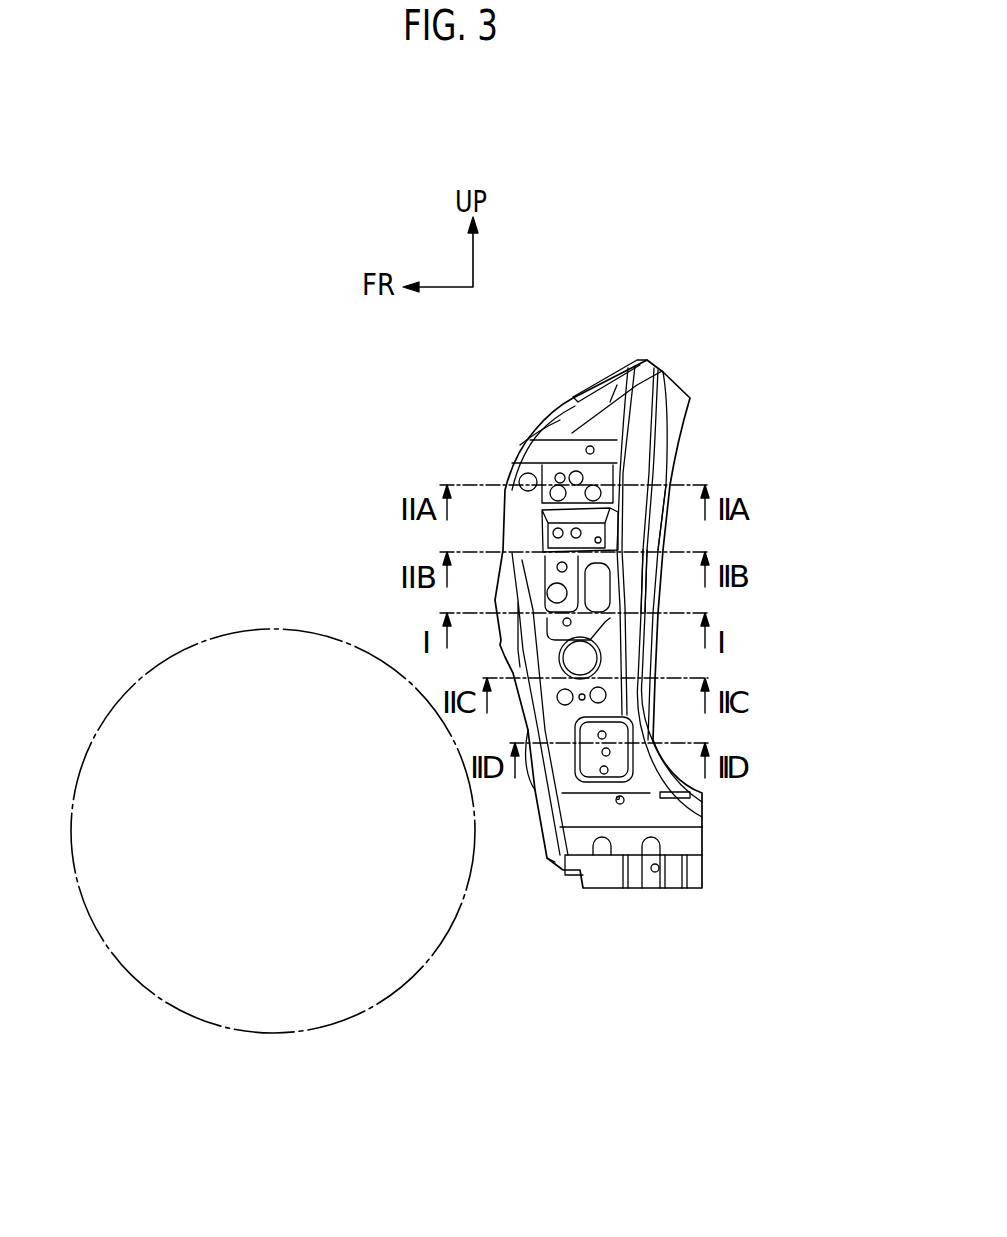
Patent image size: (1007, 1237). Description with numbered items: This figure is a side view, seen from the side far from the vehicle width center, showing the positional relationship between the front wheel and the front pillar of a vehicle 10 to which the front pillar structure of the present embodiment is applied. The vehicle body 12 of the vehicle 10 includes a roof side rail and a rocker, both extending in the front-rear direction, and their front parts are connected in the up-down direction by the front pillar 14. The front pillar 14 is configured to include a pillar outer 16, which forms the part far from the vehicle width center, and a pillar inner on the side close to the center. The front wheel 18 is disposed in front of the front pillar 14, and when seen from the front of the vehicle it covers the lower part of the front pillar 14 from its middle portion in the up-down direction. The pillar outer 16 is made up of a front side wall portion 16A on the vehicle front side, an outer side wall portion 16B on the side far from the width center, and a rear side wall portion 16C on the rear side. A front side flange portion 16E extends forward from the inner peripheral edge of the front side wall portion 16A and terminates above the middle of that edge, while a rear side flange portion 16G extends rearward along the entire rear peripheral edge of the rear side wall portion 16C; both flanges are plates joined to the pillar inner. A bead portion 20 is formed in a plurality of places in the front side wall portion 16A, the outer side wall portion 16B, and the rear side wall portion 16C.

The vehicle 10 is at (225, 456).
The vehicle body 12 is at (599, 623).
The front pillar 14 is at (712, 394).
The pillar outer 16 is at (570, 433).
The front side wall portion 16A is at (533, 437).
The outer side wall portion 16B is at (578, 802).
The rear side wall portion 16C is at (617, 478).
The front side flange portion 16E is at (545, 792).
The rear side flange portion 16G is at (633, 530).
The front wheel 18 is at (245, 627).
The bead portion 20 is at (580, 478).